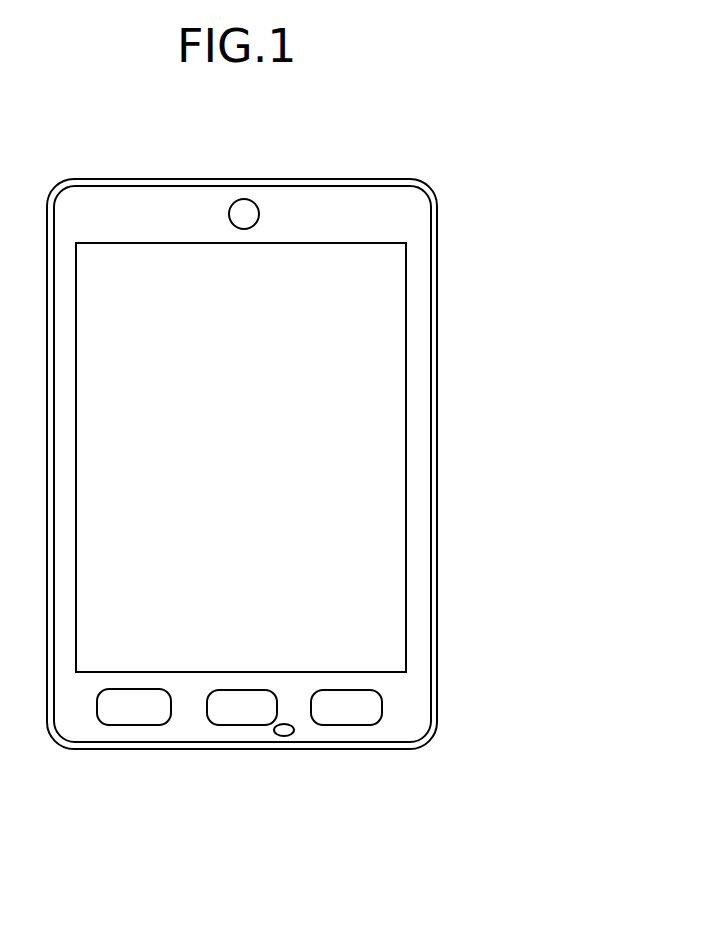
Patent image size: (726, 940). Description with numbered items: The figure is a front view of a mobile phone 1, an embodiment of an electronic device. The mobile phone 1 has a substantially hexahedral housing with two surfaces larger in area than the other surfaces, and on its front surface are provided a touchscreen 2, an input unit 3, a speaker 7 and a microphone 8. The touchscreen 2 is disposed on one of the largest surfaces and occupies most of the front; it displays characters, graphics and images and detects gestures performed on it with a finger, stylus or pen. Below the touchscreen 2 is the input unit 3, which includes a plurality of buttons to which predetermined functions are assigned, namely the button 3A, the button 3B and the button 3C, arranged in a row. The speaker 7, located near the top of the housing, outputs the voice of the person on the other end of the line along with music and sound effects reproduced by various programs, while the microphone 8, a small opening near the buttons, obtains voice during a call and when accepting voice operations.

The mobile phone 1 is at (414, 136).
The touchscreen 2 is at (333, 409).
The input unit 3 is at (238, 771).
The button 3A is at (135, 725).
The button 3B is at (243, 725).
The button 3C is at (346, 749).
The speaker 7 is at (244, 199).
The microphone 8 is at (284, 736).